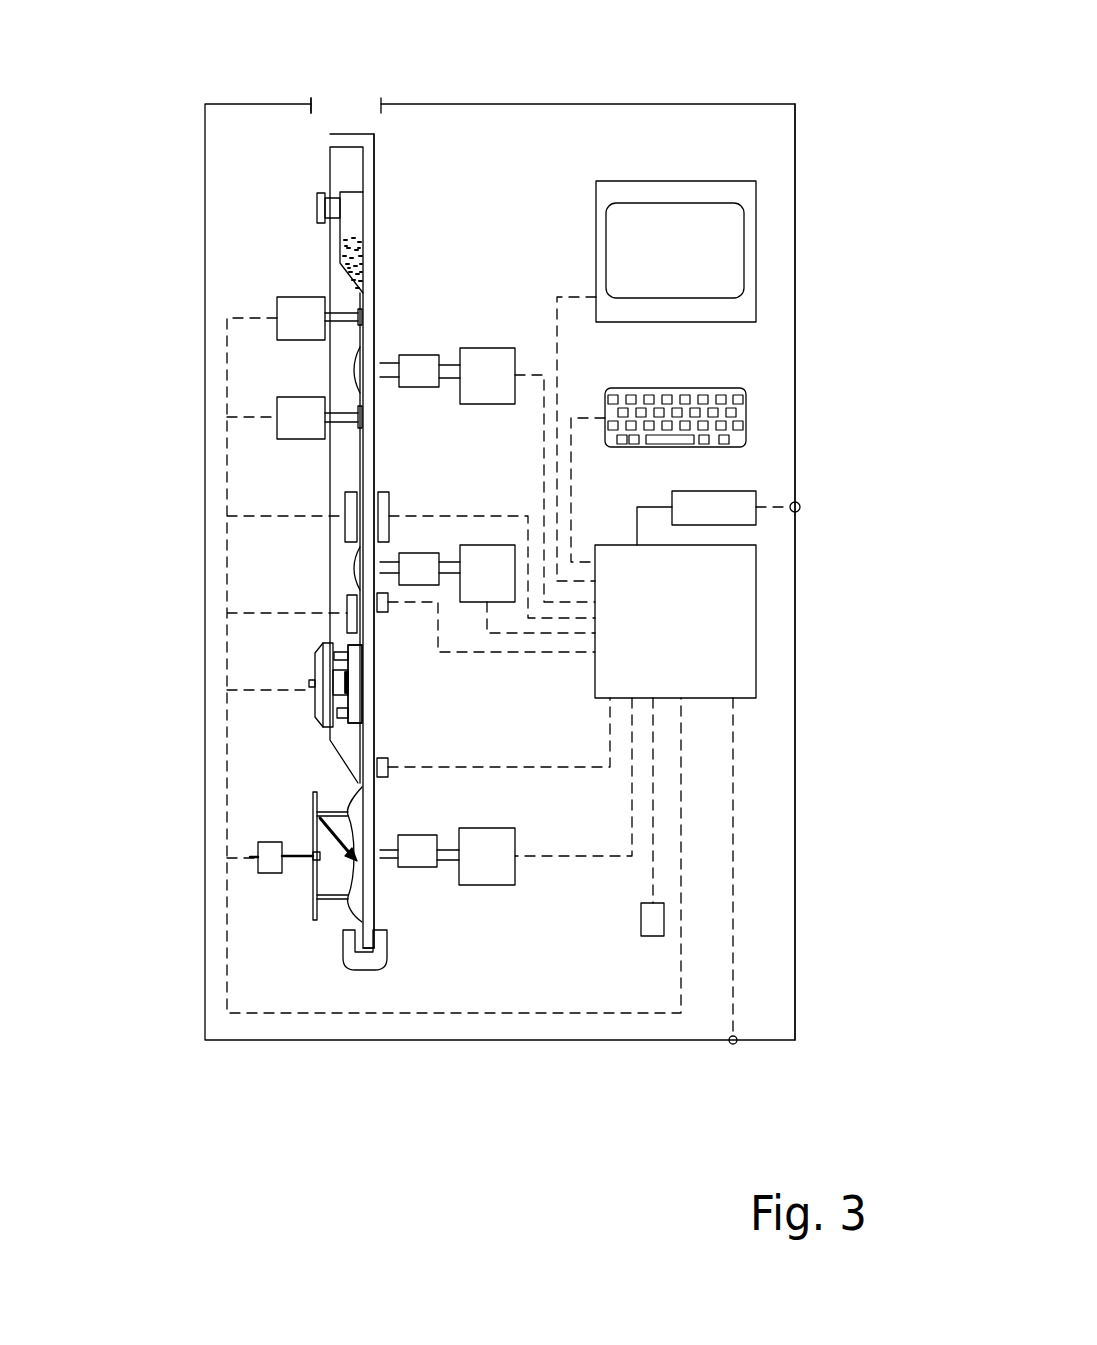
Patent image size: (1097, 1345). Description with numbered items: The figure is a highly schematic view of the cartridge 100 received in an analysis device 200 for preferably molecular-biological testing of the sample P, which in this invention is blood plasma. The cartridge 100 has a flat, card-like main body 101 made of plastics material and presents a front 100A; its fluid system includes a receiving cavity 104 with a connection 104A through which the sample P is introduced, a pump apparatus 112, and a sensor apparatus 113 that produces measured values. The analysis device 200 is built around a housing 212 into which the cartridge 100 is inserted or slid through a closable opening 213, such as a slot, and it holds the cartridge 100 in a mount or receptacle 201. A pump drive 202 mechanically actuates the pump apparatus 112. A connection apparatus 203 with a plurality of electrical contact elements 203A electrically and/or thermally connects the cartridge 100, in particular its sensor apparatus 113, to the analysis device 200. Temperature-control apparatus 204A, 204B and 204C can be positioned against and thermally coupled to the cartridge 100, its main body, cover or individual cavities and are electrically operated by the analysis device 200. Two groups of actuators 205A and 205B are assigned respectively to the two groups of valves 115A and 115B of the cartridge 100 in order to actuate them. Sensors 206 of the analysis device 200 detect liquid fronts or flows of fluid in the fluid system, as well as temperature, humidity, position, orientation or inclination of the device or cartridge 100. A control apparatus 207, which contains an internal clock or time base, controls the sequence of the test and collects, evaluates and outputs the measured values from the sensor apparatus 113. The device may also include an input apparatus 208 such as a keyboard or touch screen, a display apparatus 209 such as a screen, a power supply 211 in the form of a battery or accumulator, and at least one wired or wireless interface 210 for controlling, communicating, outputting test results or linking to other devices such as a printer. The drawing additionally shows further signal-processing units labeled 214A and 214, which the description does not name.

The analysis device 200 is at (830, 94).
The opening 213 is at (325, 105).
The cartridge 100 is at (339, 106).
The front 100A is at (373, 160).
The receiving cavity 104 is at (353, 198).
The connection 104A is at (317, 208).
The sample P is at (353, 257).
The valves 115B is at (362, 310).
The actuators 205B is at (290, 313).
The valves 115A is at (356, 364).
The actuators 205A is at (486, 357).
The temperature-control apparatus 204A is at (383, 530).
The sensors 206 is at (377, 597).
The temperature-control apparatus 204B is at (348, 628).
The connection apparatus 203 is at (318, 708).
The electrical contact elements 203A is at (340, 653).
The sensor apparatus 113 is at (357, 679).
The temperature-control apparatus 204C is at (343, 690).
The pump apparatus 112 is at (355, 810).
The pump drive 202 is at (313, 907).
The main body 101 is at (350, 931).
The receptacle 201 is at (345, 960).
The display apparatus 209 is at (756, 222).
The housing 212 is at (796, 278).
The input apparatus 208 is at (746, 403).
The power supply 211 is at (756, 488).
The control apparatus 207 is at (756, 590).
The amplifier 214A is at (389, 857).
The signal processor 214 is at (487, 886).
The interface 210 is at (733, 1045).